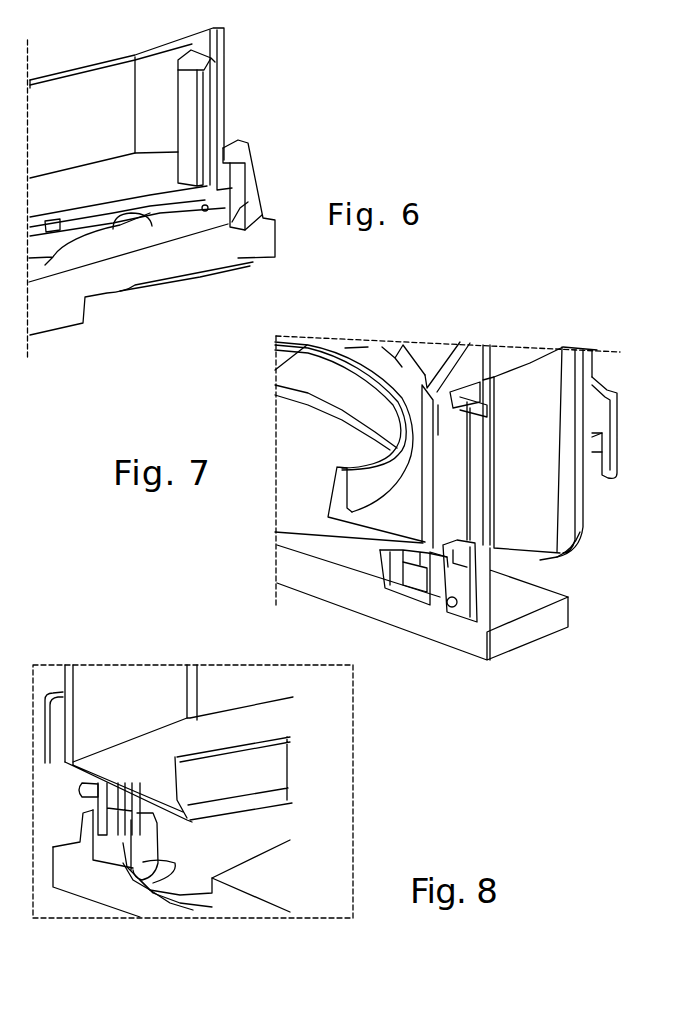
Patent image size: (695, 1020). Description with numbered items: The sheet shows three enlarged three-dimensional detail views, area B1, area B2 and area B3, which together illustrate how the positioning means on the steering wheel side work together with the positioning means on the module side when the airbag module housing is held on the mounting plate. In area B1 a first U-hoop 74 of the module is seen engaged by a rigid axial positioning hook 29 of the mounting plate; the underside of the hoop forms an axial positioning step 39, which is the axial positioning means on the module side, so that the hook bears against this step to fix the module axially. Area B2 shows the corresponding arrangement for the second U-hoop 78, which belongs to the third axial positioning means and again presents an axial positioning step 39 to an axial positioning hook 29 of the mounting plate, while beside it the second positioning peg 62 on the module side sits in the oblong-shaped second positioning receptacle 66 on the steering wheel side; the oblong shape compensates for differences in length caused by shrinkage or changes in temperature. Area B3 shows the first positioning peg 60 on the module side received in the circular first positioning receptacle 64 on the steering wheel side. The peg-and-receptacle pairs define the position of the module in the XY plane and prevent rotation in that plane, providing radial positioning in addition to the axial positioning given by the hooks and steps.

In FIG. 6, the first U-hoop 74 is at (222, 108).
In FIG. 6, the axial positioning hook 29 is at (247, 180).
In FIG. 6, the axial positioning step 39 is at (232, 222).
In FIG. 7, the axial positioning step 39 is at (452, 608).
In FIG. 7, the second positioning receptacle 66 is at (377, 578).
In FIG. 7, the second positioning peg 62 is at (390, 570).
In FIG. 7, the second U-hoop 78 is at (537, 570).
In FIG. 8, the first positioning peg 60 is at (158, 828).
In FIG. 8, the first positioning receptacle 64 is at (215, 912).
In FIG. 6, the area B1 is at (244, 37).
In FIG. 7, the area B2 is at (539, 661).
In FIG. 8, the area B3 is at (273, 665).